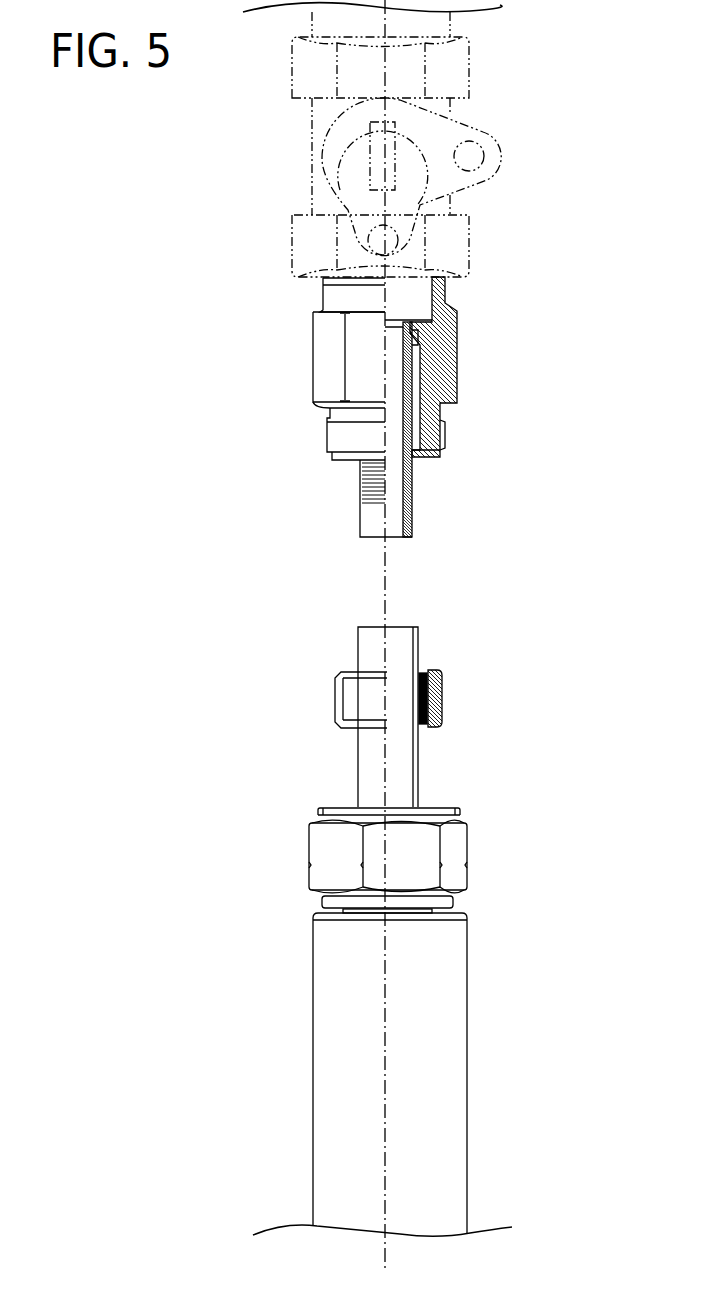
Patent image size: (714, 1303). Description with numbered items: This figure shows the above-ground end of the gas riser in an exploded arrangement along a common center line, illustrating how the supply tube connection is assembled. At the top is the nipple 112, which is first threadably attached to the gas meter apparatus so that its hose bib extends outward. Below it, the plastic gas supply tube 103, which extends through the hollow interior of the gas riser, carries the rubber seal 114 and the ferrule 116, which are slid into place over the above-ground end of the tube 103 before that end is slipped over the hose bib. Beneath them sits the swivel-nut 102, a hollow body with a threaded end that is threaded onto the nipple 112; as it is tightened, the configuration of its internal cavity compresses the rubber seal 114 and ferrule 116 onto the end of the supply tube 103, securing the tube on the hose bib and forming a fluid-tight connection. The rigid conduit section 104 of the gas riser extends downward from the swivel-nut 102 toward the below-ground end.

The swivel-nut 102 is at (460, 851).
The plastic gas supply tube 103 is at (365, 643).
The rigid conduit section 104 is at (452, 1093).
The nipple 112 is at (327, 357).
The rubber seal 114 is at (345, 698).
The ferrule 116 is at (417, 682).